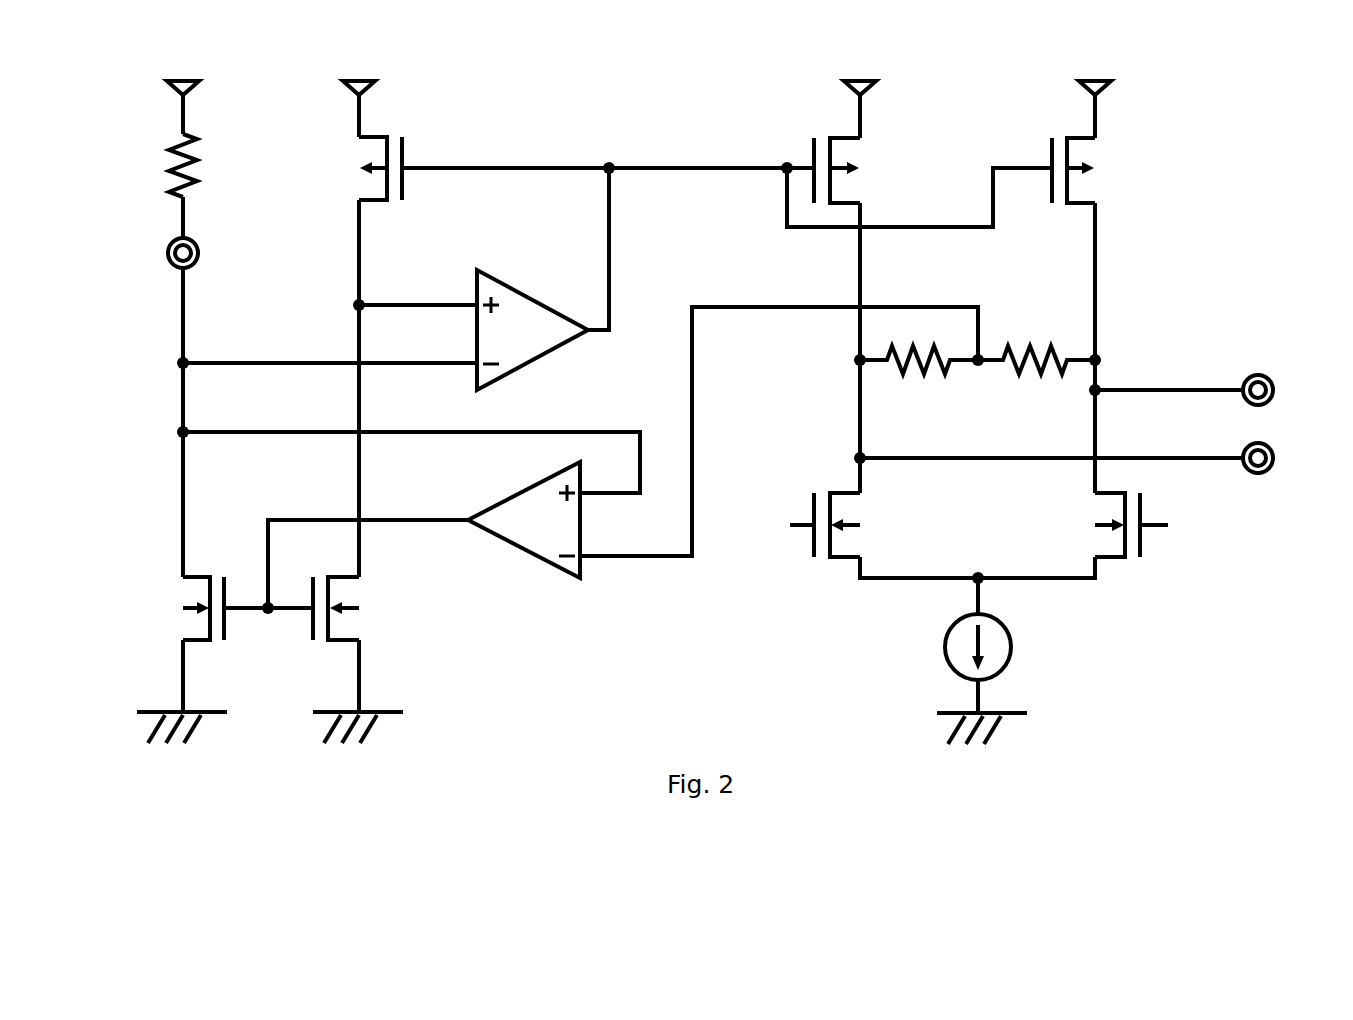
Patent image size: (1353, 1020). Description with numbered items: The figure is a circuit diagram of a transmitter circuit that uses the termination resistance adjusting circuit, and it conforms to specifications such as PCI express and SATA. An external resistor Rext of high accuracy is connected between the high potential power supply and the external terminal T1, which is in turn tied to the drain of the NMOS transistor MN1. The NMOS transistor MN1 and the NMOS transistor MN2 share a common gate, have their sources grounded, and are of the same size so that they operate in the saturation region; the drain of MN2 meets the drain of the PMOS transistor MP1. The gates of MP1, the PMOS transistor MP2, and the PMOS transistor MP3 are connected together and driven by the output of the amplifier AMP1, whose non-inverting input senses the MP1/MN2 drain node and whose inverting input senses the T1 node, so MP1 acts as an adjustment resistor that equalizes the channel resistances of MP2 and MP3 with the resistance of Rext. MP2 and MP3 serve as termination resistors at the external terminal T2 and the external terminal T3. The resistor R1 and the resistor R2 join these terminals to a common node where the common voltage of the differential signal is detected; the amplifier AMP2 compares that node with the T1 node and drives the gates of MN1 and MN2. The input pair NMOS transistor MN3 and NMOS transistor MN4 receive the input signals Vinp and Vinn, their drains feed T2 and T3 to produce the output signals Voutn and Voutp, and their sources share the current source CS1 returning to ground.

The external resistor Rext is at (170, 162).
The external terminal T1 is at (162, 253).
The PMOS transistor MP1 is at (343, 168).
The amplifier AMP1 is at (487, 272).
The PMOS transistor MP2 is at (866, 170).
The PMOS transistor MP3 is at (1106, 170).
The resistor R1 is at (919, 380).
The resistor R2 is at (1036, 380).
The external terminal T3 is at (1258, 375).
The output signal Voutp is at (1226, 391).
The external terminal T2 is at (1259, 476).
The output signal Voutn is at (1109, 458).
The NMOS transistor MN3 is at (868, 525).
The input signal Vinp is at (772, 525).
The NMOS transistor MN4 is at (1085, 525).
The input signal Vinn is at (1183, 525).
The current source CS1 is at (1012, 647).
The amplifier AMP2 is at (578, 580).
The NMOS transistor MN1 is at (168, 608).
The NMOS transistor MN2 is at (369, 608).